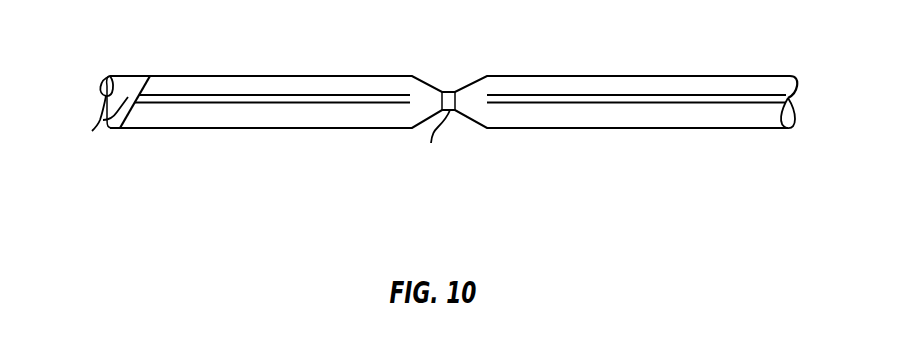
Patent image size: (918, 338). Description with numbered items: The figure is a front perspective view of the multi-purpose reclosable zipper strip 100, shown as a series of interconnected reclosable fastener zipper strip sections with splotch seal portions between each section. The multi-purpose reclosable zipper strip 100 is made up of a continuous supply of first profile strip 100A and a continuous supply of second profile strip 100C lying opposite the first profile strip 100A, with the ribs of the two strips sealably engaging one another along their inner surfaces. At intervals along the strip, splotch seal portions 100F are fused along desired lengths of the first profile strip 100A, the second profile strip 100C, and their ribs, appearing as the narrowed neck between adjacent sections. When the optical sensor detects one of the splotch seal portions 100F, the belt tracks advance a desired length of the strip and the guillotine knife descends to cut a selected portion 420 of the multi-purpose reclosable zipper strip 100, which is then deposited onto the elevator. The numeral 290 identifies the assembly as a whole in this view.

The selected portion 420 is at (218, 76).
The first profile strip 100A is at (263, 106).
The second profile strip 100C is at (342, 117).
The multi-purpose reclosable zipper strip 100 is at (660, 63).
The fiber optic splice assembly 290 is at (260, 62).
The splotch seal portions 100F is at (98, 126).